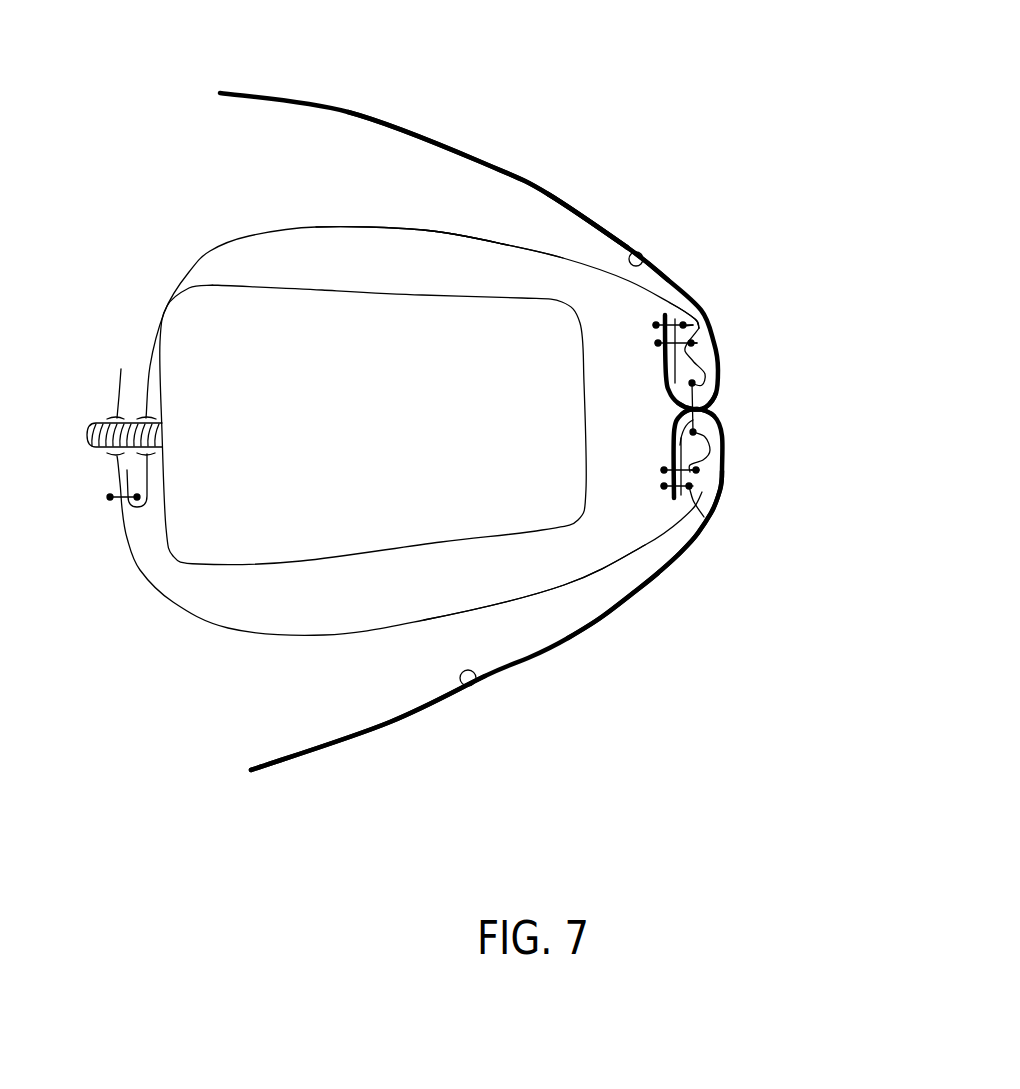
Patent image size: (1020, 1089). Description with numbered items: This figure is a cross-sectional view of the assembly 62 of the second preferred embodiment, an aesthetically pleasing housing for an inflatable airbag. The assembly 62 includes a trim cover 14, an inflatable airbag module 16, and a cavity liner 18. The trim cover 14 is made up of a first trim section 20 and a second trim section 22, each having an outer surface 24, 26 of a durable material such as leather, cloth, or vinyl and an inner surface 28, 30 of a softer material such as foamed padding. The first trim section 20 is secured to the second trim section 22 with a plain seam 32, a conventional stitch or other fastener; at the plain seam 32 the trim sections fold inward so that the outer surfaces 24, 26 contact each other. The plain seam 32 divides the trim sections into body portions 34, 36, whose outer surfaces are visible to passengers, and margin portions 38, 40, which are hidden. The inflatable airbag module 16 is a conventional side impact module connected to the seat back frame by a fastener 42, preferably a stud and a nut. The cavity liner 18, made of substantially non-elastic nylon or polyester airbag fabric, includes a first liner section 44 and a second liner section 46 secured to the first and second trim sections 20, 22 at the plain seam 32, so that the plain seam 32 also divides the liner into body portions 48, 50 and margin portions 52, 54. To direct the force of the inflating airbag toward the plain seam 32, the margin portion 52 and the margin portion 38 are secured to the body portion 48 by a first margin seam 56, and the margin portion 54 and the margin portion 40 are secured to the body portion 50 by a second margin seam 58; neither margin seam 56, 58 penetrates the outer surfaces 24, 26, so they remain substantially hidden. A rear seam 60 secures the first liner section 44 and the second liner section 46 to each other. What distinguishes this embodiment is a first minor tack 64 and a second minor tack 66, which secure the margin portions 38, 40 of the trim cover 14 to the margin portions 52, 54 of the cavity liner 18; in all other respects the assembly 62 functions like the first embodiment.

The trim cover 14 is at (342, 99).
The inflatable airbag module 16 is at (202, 278).
The cavity liner 18 is at (195, 247).
The first trim section 20 is at (474, 156).
The second trim section 22 is at (277, 762).
The outer surface 24 is at (543, 194).
The outer surface 26 is at (387, 723).
The inner surface 28 is at (634, 260).
The inner surface 30 is at (477, 680).
The plain seam 32 is at (700, 403).
The body portion 34 is at (701, 306).
The body portion 36 is at (640, 580).
The margin portion 38 is at (656, 363).
The margin portion 40 is at (668, 427).
The fastener 42 is at (100, 440).
The first liner section 44 is at (403, 226).
The second liner section 46 is at (417, 623).
The body portion 48 is at (490, 239).
The body portion 50 is at (552, 587).
The margin portion 52 is at (663, 362).
The margin portion 54 is at (673, 448).
The first margin seam 56 is at (690, 342).
The second margin seam 58 is at (695, 472).
The rear seam 60 is at (110, 495).
The assembly 62 is at (609, 49).
The first minor tack 64 is at (683, 325).
The second minor tack 66 is at (702, 524).